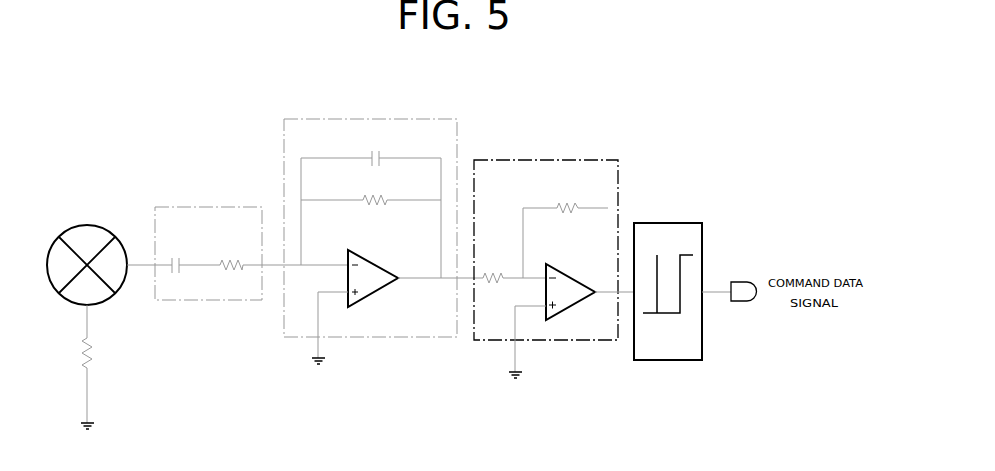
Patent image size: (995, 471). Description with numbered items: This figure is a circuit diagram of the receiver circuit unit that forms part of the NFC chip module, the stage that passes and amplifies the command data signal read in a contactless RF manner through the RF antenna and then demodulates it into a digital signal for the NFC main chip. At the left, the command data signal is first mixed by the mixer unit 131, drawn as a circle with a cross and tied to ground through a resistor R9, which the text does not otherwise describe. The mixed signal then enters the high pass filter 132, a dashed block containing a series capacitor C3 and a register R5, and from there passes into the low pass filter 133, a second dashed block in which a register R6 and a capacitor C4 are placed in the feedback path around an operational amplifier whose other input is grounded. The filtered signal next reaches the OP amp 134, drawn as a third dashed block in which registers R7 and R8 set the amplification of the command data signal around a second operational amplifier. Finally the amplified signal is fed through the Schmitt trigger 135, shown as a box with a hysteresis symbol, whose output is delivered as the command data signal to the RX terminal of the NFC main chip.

The mixer unit 131 is at (87, 225).
The high pass filter 132 is at (251, 227).
The low pass filter 133 is at (383, 216).
The OP amp 134 is at (554, 243).
The Schmitt trigger 135 is at (667, 223).
The resistor R9 is at (76, 383).
The capacitor C3 is at (175, 258).
The register R5 is at (231, 256).
The capacitor C4 is at (374, 151).
The register R6 is at (375, 191).
The register R7 is at (493, 269).
The register R8 is at (567, 199).